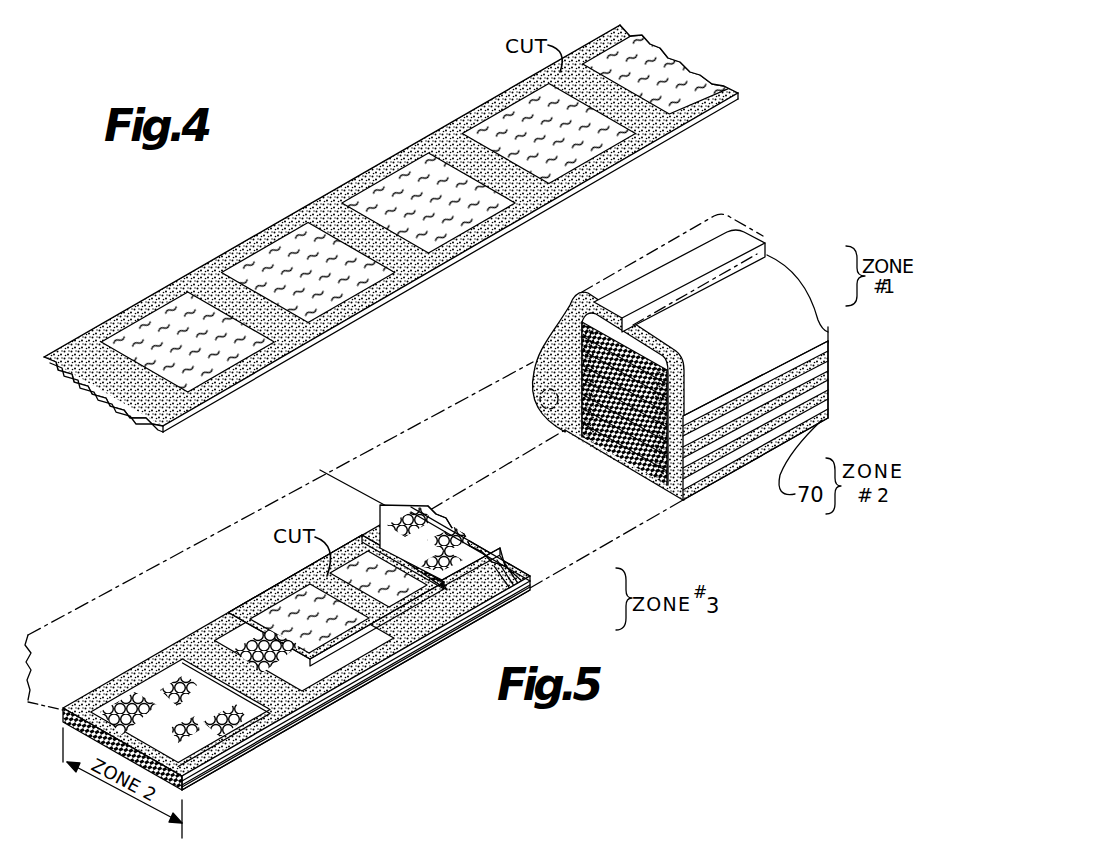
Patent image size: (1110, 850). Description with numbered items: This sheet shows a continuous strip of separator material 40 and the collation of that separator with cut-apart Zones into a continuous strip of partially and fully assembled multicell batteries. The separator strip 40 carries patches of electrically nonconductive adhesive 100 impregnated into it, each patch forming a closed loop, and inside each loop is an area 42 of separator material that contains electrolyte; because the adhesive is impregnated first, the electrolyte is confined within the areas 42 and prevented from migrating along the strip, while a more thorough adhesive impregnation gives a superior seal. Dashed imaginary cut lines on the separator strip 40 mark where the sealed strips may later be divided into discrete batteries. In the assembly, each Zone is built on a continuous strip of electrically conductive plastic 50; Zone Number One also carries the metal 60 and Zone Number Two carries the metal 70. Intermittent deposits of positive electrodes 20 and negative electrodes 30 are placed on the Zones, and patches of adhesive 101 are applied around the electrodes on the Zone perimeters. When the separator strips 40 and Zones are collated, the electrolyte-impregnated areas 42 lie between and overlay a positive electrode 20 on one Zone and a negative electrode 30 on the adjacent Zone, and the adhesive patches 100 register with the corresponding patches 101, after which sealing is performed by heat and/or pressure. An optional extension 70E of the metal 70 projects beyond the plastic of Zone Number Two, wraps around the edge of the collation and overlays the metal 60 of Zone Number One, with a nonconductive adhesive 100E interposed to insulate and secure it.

In FIG. 5, the positive electrode 20 is at (455, 600).
In FIG. 5, the negative electrode 30 is at (157, 683).
In FIG. 4, the continuous strip of separator material 40 is at (268, 370).
In FIG. 5, the continuous strip of separator material 40 is at (828, 357).
In FIG. 4, the area of separator material containing electrolyte 42 is at (590, 130).
In FIG. 5, the area of separator material containing electrolyte 42 is at (273, 612).
In FIG. 5, the electrically conductive plastic 50 is at (828, 348).
In FIG. 5, the metal 60 is at (828, 342).
In FIG. 5, the metal 70 is at (240, 758).
In FIG. 5, the extension of the metal strip 70E is at (546, 358).
In FIG. 4, the electrically nonconductive adhesive 100 is at (318, 218).
In FIG. 5, the nonconductive adhesive 100E is at (555, 405).
In FIG. 5, the patches of adhesive 101 is at (205, 764).